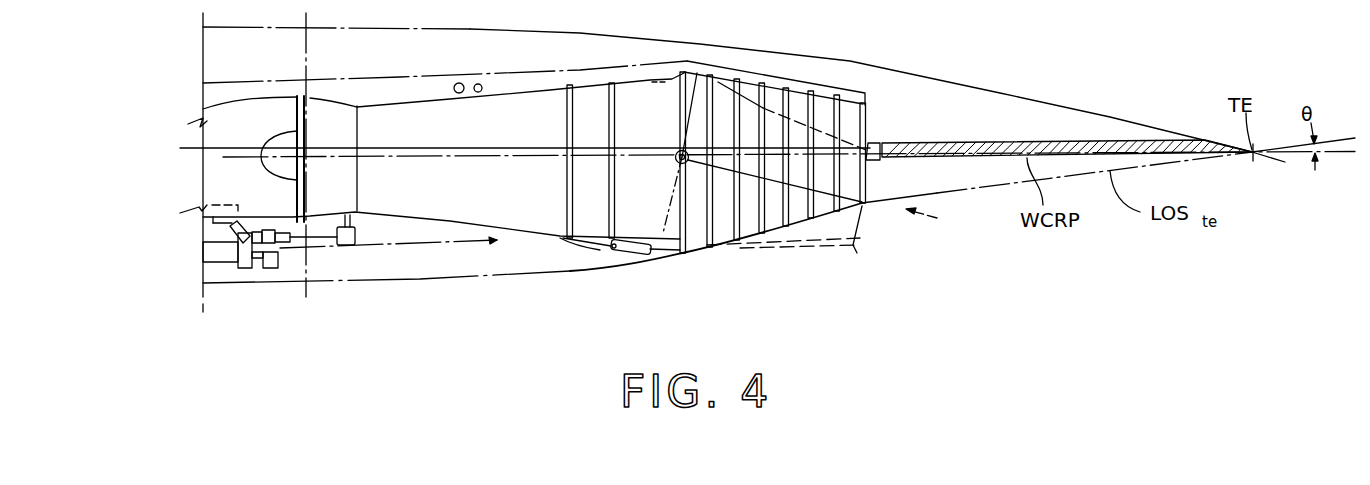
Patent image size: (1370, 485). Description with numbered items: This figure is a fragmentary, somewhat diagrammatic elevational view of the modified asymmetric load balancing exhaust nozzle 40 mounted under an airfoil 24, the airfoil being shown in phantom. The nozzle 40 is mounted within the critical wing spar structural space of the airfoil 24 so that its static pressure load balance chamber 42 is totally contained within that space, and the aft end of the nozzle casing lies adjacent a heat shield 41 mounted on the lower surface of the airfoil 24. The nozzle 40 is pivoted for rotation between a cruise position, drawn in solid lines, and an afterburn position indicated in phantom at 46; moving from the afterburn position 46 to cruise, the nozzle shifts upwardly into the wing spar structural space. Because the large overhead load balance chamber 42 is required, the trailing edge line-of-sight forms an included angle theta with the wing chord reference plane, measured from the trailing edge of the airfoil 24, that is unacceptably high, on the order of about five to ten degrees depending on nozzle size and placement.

The airfoil 24 is at (930, 77).
The asymmetric load balancing exhaust nozzle 40 is at (880, 182).
The heat shield 41 is at (1018, 156).
The static pressure load balance chamber 42 is at (857, 122).
The afterburn position 46 is at (857, 253).